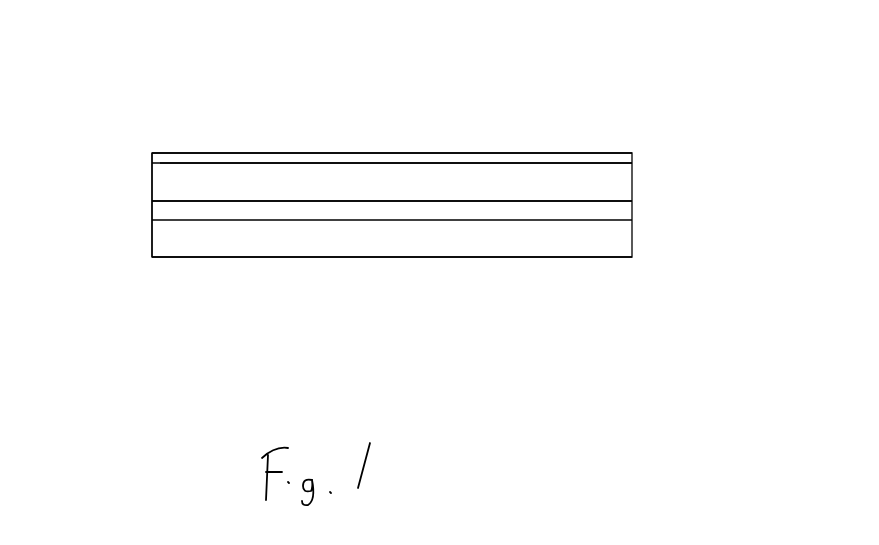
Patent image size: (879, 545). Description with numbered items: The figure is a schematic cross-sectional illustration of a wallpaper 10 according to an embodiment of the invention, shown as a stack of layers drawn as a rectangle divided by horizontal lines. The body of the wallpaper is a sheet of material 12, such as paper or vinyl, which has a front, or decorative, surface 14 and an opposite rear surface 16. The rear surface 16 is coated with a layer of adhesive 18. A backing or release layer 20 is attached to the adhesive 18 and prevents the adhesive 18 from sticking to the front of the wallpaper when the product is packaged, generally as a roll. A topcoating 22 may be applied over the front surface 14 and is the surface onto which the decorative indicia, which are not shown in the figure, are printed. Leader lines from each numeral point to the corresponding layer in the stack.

The wallpaper 10 is at (363, 132).
The sheet of material 12 is at (448, 180).
The front surface 14 is at (464, 127).
The rear surface 16 is at (437, 220).
The layer of adhesive 18 is at (446, 254).
The backing layer 20 is at (451, 298).
The topcoating 22 is at (91, 199).